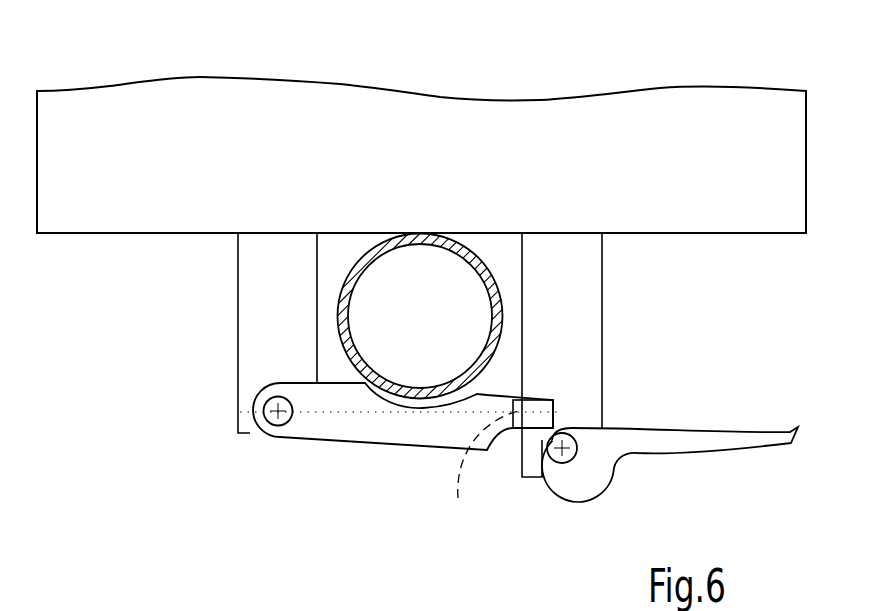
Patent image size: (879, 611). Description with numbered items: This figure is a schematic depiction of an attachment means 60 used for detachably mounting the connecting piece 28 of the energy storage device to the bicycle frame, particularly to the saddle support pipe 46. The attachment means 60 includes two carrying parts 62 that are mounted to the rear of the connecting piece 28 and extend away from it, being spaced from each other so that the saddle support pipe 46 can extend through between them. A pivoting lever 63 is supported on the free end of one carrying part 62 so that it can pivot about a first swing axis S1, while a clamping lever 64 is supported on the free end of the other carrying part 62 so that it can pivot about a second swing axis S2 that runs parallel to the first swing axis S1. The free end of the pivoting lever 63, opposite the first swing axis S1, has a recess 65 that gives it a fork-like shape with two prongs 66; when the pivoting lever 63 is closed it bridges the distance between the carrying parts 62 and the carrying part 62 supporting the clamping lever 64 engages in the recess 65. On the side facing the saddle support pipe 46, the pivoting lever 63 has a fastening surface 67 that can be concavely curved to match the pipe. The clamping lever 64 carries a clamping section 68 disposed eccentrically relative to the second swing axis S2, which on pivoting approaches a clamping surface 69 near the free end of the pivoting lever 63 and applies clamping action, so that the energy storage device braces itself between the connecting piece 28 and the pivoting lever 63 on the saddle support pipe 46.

The connecting piece 28 is at (448, 125).
The saddle support pipe 46 is at (473, 250).
The carrying parts 62 is at (573, 287).
The attachment means 60 is at (680, 321).
The pivoting lever 63 is at (325, 427).
The first swing axis S1 is at (270, 413).
The prongs 66 is at (533, 412).
The fastening surface 67 is at (415, 412).
The recess 65 is at (486, 469).
The clamping surface 69 is at (508, 458).
The clamping lever 64 is at (655, 440).
The clamping section 68 is at (587, 468).
The second swing axis S2 is at (550, 465).